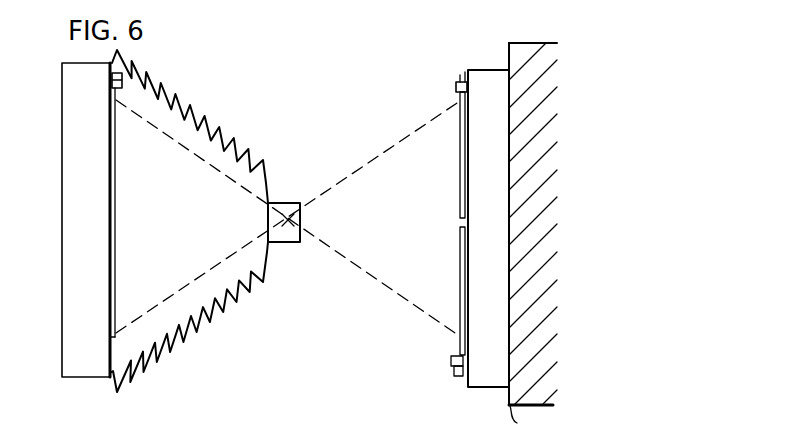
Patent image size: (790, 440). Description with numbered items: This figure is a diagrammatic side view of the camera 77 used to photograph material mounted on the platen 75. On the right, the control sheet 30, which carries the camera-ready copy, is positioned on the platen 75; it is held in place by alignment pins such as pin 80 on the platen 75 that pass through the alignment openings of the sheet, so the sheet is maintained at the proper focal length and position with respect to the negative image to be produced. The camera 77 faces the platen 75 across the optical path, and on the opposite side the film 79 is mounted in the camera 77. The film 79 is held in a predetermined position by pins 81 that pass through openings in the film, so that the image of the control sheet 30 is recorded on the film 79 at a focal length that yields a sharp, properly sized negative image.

The control sheet 30 is at (460, 168).
The platen 75 is at (495, 197).
The camera 77 is at (190, 108).
The film 79 is at (115, 208).
The alignment pin 80 is at (457, 83).
The pin 81 is at (122, 80).